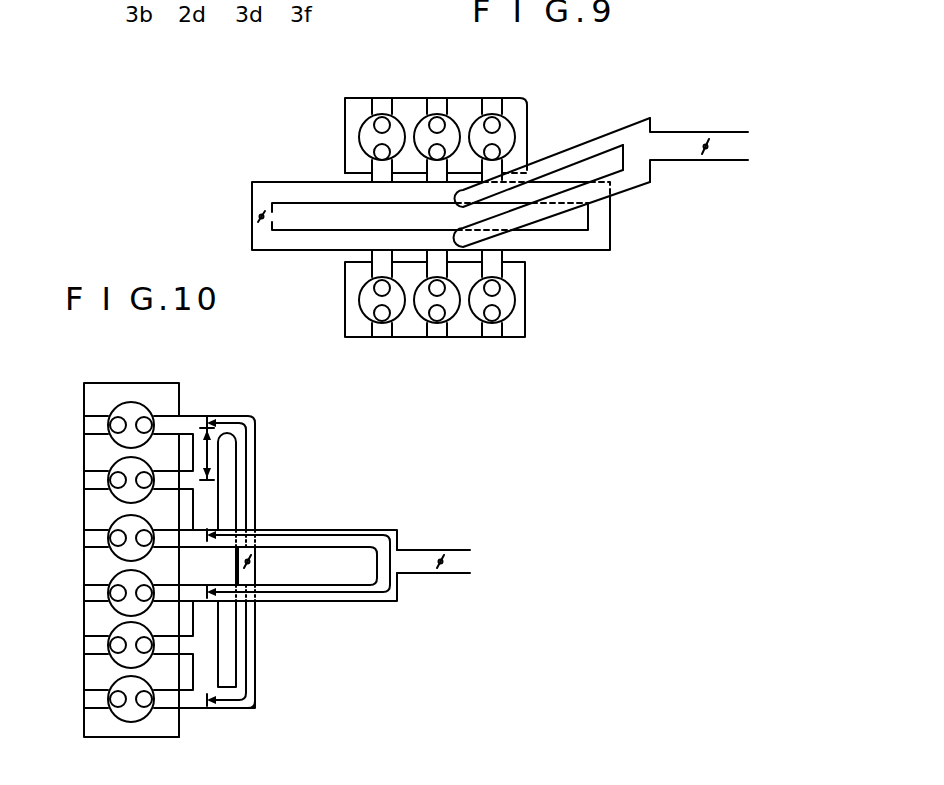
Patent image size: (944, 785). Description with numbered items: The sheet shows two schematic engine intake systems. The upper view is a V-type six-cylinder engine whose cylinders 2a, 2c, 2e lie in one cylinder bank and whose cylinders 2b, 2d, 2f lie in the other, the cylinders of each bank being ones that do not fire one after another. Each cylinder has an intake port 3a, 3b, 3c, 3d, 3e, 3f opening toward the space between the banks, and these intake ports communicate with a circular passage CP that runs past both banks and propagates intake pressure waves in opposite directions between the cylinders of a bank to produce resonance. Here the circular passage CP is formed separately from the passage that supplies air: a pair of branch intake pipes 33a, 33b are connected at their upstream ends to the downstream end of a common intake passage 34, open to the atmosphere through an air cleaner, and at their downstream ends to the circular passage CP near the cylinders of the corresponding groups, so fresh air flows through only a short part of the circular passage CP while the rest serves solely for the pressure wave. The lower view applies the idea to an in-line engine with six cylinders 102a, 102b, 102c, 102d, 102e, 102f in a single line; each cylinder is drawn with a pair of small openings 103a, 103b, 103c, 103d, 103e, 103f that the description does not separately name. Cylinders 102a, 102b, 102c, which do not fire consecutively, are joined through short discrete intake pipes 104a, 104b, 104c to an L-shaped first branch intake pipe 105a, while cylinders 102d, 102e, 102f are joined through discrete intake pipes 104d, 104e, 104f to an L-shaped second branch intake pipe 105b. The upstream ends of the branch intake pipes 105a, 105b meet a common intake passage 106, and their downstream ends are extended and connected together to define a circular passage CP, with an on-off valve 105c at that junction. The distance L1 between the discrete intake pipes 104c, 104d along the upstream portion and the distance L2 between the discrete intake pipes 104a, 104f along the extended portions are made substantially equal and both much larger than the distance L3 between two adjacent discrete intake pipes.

In FIG. 9, the cylinder 2a is at (386, 147).
In FIG. 9, the cylinder 2b is at (360, 290).
In FIG. 9, the cylinder 2c is at (463, 120).
In FIG. 9, the cylinder 2d is at (408, 337).
In FIG. 9, the cylinder 2e is at (523, 106).
In FIG. 9, the cylinder 2f is at (508, 292).
In FIG. 9, the intake port 3a is at (362, 128).
In FIG. 9, the intake port 3b is at (362, 337).
In FIG. 9, the intake port 3c is at (434, 150).
In FIG. 9, the intake port 3d is at (462, 337).
In FIG. 9, the intake port 3e is at (488, 150).
In FIG. 9, the intake port 3f is at (510, 337).
In FIG. 9, the branch intake pipe 33a is at (583, 144).
In FIG. 9, the branch intake pipe 33b is at (636, 187).
In FIG. 9, the common intake passage 34 is at (725, 162).
In FIG. 9, the circular passage CP is at (267, 170).
In FIG. 10, the circular passage CP is at (263, 705).
In FIG. 10, the cylinder 102a is at (115, 408).
In FIG. 10, the cylinder 102b is at (114, 463).
In FIG. 10, the cylinder 102c is at (115, 521).
In FIG. 10, the cylinder 102d is at (115, 577).
In FIG. 10, the cylinder 102e is at (115, 629).
In FIG. 10, the cylinder 102f is at (115, 683).
In FIG. 10, the small hole 103a is at (141, 417).
In FIG. 10, the small hole 103b is at (142, 486).
In FIG. 10, the small hole 103c is at (142, 543).
In FIG. 10, the small hole 103d is at (143, 597).
In FIG. 10, the small hole 103e is at (143, 649).
In FIG. 10, the small hole 103f is at (138, 710).
In FIG. 10, the discrete intake pipe 104a is at (170, 418).
In FIG. 10, the discrete intake pipe 104b is at (219, 470).
In FIG. 10, the discrete intake pipe 104c is at (185, 531).
In FIG. 10, the discrete intake pipe 104d is at (185, 613).
In FIG. 10, the discrete intake pipe 104e is at (160, 650).
In FIG. 10, the discrete intake pipe 104f is at (160, 710).
In FIG. 10, the first branch intake pipe 105a is at (235, 460).
In FIG. 10, the second branch intake pipe 105b is at (243, 670).
In FIG. 10, the on-off valve 105c is at (256, 562).
In FIG. 10, the common intake passage 106 is at (418, 574).
In FIG. 10, the distance L1 is at (397, 530).
In FIG. 10, the distance L2 is at (248, 416).
In FIG. 10, the distance L3 is at (207, 428).